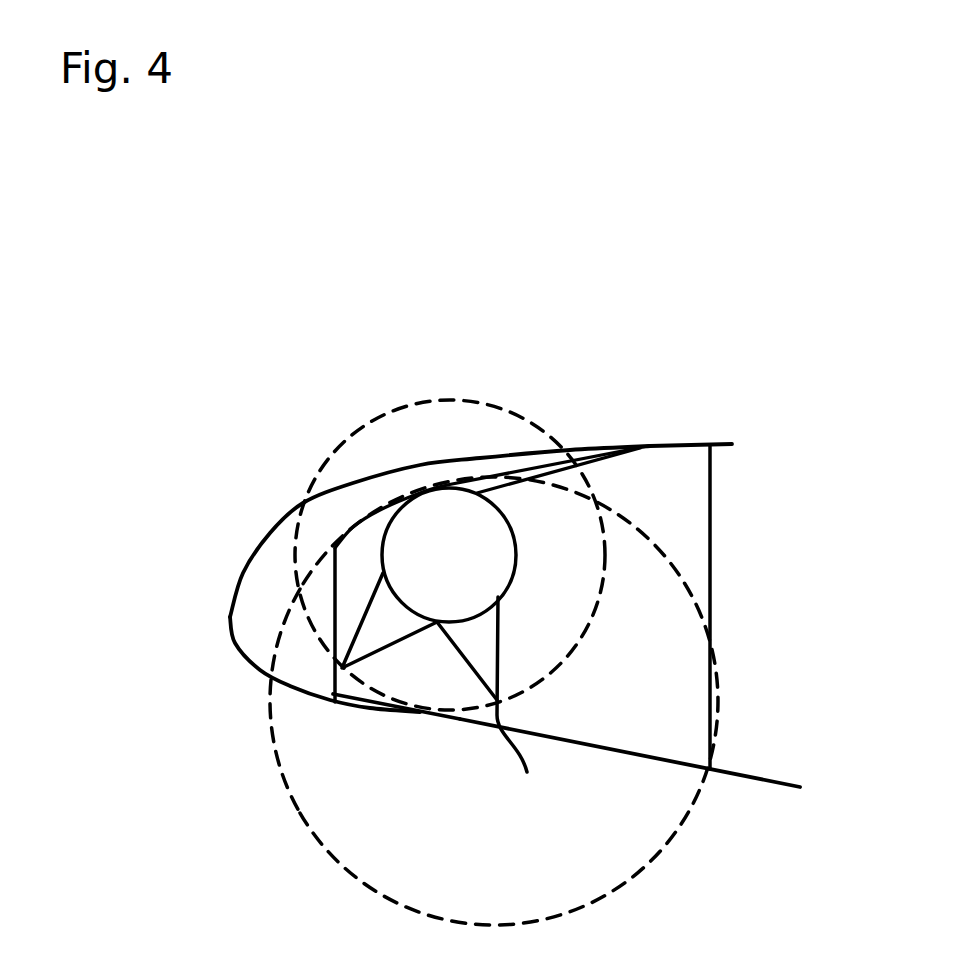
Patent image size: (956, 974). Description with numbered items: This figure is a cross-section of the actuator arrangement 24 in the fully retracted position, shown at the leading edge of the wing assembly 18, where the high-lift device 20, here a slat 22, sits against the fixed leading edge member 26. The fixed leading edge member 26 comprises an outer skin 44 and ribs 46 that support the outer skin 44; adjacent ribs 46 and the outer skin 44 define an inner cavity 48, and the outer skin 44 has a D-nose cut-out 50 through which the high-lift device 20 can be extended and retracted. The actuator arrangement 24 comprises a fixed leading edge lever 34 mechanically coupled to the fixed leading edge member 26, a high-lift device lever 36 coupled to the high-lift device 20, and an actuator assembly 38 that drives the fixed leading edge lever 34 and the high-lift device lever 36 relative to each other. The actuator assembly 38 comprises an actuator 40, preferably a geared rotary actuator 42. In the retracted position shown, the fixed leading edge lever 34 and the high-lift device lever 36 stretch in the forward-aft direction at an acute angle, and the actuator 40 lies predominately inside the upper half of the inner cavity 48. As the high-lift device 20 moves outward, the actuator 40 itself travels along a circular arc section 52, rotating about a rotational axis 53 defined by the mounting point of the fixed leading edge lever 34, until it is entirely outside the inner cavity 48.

The wing assembly 18 is at (264, 238).
The high-lift device 20 is at (253, 565).
The slat 22 is at (240, 587).
The actuator arrangement 24 is at (474, 336).
The fixed leading edge member 26 is at (710, 428).
The fixed leading edge lever 34 is at (488, 663).
The high-lift device lever 36 is at (372, 638).
The actuator assembly 38 is at (550, 415).
The actuator 40 is at (490, 550).
The geared rotary actuator 42 is at (490, 578).
The outer skin 44 is at (643, 756).
The rib 46 is at (700, 490).
The inner cavity 48 is at (667, 641).
The D-nose cut-out 50 is at (457, 738).
The circular arc section 52 is at (272, 704).
The rotational axis 53 is at (522, 710).